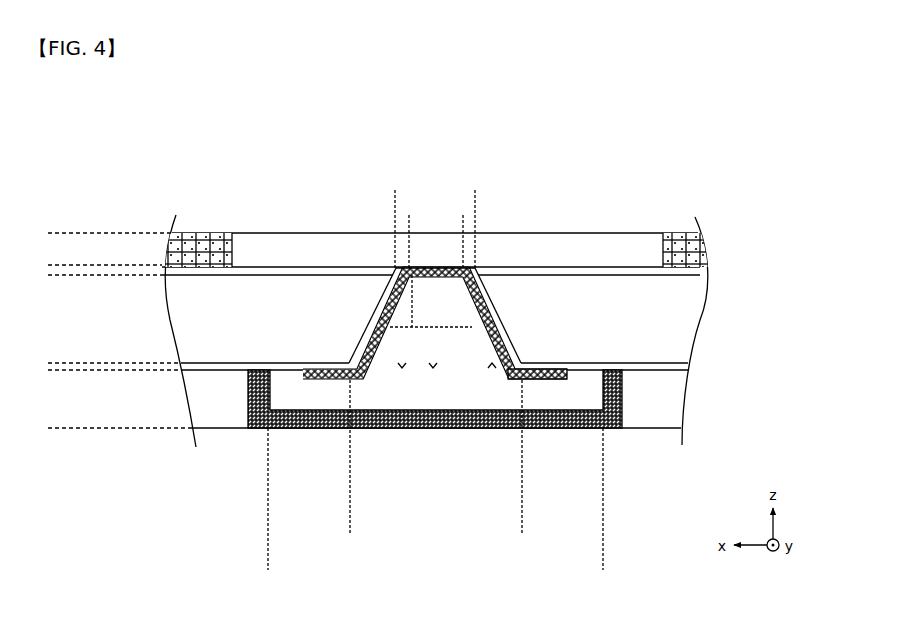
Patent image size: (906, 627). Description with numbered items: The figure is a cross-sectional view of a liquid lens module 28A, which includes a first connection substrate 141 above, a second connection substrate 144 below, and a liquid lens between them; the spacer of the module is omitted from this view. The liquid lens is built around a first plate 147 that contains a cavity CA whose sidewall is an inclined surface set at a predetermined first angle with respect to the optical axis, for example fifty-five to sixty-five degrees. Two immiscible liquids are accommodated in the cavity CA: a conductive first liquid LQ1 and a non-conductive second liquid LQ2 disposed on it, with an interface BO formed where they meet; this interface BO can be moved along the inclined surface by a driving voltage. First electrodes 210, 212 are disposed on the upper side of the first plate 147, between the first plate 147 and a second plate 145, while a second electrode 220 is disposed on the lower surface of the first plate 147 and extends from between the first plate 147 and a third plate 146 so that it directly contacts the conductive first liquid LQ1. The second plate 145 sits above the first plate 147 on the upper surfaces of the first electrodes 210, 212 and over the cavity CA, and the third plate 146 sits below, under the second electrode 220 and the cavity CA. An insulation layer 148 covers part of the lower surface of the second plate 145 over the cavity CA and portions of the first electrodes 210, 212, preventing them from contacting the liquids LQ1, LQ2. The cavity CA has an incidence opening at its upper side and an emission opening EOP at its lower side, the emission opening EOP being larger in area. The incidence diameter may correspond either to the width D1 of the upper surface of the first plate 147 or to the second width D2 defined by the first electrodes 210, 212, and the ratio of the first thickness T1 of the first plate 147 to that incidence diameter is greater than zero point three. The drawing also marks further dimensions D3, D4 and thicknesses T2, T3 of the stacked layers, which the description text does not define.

The first connection substrate 141 is at (212, 245).
The first electrode 212 is at (258, 265).
The second plate 145 is at (623, 245).
The first electrode 210 is at (698, 272).
The first plate 147 is at (693, 322).
The second electrode 220 is at (688, 366).
The second connection substrate 144 is at (668, 415).
The third plate 146 is at (255, 432).
The insulation layer 148 is at (551, 380).
The liquid lens module 28A is at (657, 172).
The first liquid LQ1 is at (402, 368).
The second liquid LQ2 is at (432, 291).
The emission opening EOP is at (433, 368).
The interface BO is at (459, 327).
The cavity CA is at (491, 368).
The width of the upper surface of the first plate D1 is at (395, 196).
The second width D2 is at (409, 221).
The third width D3 is at (350, 522).
The fourth width D4 is at (268, 560).
The first thickness T1 is at (59, 280).
The second thickness T2 is at (59, 233).
The third thickness T3 is at (59, 372).